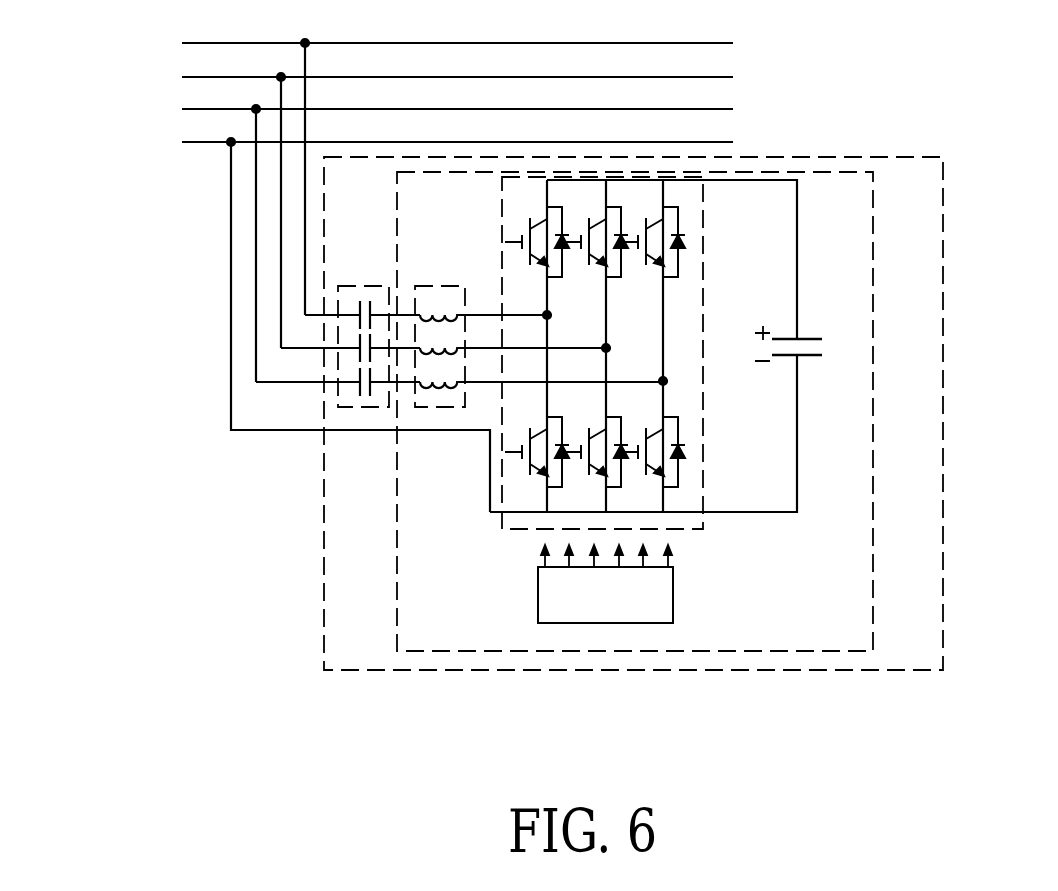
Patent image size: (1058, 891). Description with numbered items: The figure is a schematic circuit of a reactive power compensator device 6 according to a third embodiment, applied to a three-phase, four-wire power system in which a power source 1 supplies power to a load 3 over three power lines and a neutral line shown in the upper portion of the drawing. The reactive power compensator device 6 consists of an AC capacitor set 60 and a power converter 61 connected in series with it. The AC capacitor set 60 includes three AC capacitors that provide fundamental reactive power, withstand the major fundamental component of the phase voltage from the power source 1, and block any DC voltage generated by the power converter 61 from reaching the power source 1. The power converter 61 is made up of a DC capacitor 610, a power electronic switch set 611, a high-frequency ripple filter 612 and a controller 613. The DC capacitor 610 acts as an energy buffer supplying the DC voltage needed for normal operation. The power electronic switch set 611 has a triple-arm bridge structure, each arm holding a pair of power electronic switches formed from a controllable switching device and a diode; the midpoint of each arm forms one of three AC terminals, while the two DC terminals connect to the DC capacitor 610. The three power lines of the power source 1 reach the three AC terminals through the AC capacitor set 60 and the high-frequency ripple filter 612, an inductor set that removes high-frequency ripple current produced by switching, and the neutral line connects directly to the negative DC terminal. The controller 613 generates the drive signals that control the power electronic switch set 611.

The power source 1 is at (153, 127).
The load 3 is at (786, 44).
The reactive power compensator device 6 is at (886, 670).
The AC capacitor set 60 is at (366, 407).
The power converter 61 is at (635, 460).
The DC capacitor 610 is at (808, 362).
The power electronic switch set 611 is at (705, 456).
The high-frequency ripple filter 612 is at (440, 407).
The controller 613 is at (673, 593).